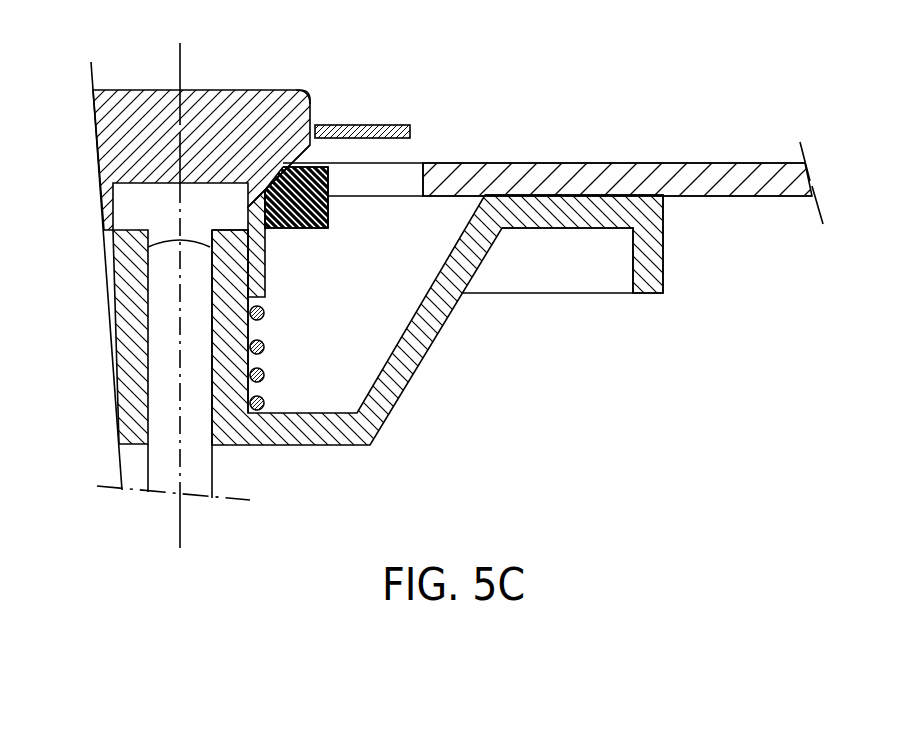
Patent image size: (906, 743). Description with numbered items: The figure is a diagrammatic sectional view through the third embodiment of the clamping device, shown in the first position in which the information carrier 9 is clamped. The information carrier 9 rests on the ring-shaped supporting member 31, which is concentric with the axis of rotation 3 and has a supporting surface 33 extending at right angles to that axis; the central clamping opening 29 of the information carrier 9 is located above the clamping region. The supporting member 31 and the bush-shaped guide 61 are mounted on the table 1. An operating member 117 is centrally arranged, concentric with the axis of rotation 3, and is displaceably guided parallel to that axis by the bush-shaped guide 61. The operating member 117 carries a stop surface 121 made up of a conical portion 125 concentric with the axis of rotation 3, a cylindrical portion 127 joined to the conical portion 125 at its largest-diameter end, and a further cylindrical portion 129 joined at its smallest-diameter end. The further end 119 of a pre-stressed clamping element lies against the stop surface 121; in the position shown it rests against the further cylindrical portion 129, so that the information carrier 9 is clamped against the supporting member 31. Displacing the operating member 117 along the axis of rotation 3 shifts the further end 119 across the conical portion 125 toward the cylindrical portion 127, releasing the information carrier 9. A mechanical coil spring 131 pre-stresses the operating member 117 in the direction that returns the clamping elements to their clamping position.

The table 1 is at (302, 438).
The axis of rotation 3 is at (180, 533).
The information carrier 9 is at (688, 163).
The central clamping opening 29 is at (425, 163).
The ring-shaped supporting member 31 is at (527, 218).
The supporting surface 33 is at (553, 180).
The bush-shaped guide 61 is at (237, 393).
The operating member 117 is at (124, 92).
The further end 119 is at (327, 218).
The stop surface 121 is at (280, 160).
The conical portion 125 is at (298, 153).
The cylindrical portion 127 is at (313, 117).
The further cylindrical portion 129 is at (267, 282).
The mechanical coil spring 131 is at (267, 317).